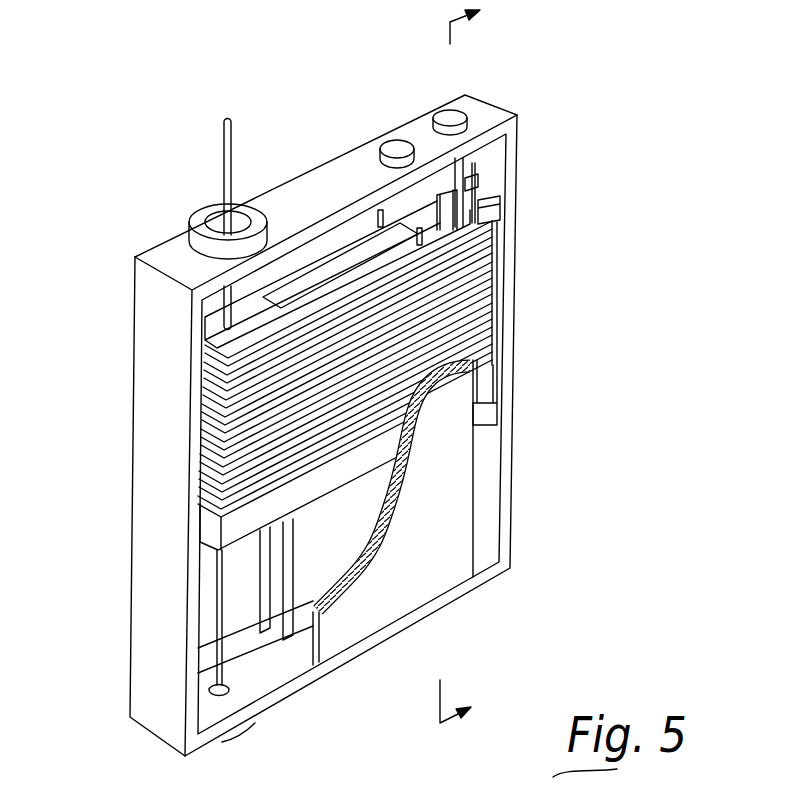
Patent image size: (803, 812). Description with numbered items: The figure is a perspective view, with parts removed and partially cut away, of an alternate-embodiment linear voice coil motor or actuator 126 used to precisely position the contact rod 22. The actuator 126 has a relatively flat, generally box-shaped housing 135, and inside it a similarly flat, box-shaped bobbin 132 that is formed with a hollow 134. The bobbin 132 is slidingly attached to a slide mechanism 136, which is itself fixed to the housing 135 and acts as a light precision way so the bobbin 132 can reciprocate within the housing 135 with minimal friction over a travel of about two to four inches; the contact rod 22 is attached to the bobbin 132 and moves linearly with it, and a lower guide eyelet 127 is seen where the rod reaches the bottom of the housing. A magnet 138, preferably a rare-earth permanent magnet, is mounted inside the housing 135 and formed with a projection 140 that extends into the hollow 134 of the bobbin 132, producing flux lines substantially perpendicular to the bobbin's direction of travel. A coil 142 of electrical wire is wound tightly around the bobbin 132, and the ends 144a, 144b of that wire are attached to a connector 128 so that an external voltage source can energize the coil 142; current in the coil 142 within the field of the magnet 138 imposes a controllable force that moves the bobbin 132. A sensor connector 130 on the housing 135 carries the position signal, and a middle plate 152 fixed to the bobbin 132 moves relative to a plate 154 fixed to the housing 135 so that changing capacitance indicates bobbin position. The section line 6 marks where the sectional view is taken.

The contact rod 22 is at (227, 150).
The actuator 126 is at (548, 338).
The eyelet 127 is at (229, 689).
The connector 128 is at (398, 142).
The sensor connector 130 is at (458, 117).
The bobbin 132 is at (230, 527).
The hollow 134 is at (340, 270).
The housing 135 is at (150, 289).
The slide mechanism 136 is at (500, 218).
The magnet 138 is at (447, 553).
The projection 140 is at (317, 577).
The coil 142 is at (200, 441).
The end of electrical wire 144a is at (380, 210).
The end of electrical wire 144b is at (364, 222).
The middle plate 152 is at (468, 183).
The plate 154 is at (488, 160).
The section line 6- 6 is at (468, 365).